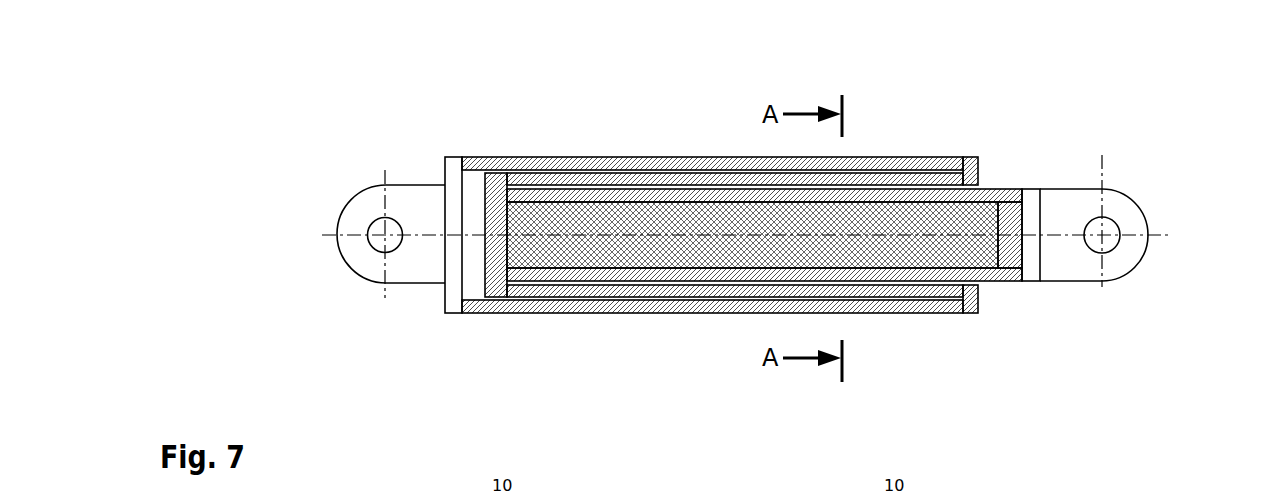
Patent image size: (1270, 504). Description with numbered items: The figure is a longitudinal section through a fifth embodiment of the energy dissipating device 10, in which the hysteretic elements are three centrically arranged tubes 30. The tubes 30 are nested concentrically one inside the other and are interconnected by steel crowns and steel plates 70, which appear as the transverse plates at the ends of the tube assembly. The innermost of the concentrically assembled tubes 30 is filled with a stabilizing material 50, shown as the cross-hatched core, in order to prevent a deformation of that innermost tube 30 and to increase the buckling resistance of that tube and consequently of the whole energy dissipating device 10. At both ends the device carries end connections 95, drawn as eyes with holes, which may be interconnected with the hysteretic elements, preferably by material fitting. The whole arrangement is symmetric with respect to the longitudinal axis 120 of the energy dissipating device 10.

The energy dissipating device 10 is at (292, 148).
The tubes 30 is at (687, 192).
The stabilizing material 50 is at (878, 253).
The steel plates 70 is at (495, 183).
The end connections 95 is at (368, 240).
The longitudinal axis 120 is at (1148, 233).